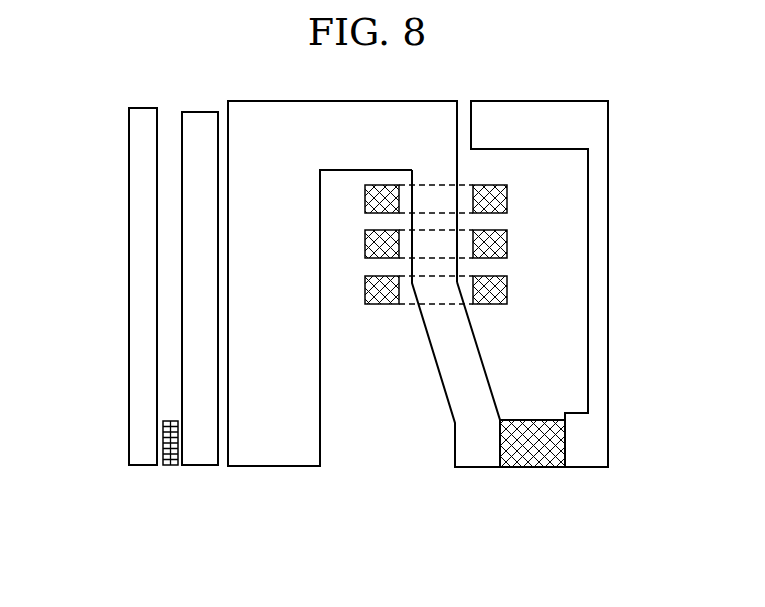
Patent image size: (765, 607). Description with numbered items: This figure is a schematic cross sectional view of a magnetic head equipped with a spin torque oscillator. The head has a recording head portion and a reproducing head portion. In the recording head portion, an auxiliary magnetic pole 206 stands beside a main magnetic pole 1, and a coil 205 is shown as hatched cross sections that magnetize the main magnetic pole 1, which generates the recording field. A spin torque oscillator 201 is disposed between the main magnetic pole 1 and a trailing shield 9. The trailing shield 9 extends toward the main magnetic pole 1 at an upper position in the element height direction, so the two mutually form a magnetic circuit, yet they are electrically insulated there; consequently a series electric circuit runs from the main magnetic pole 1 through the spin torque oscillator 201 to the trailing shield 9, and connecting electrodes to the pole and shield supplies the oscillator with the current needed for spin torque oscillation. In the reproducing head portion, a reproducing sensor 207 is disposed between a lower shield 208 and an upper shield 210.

The main magnetic pole 1 is at (460, 468).
The trailing shield 9 is at (608, 383).
The spin torque oscillator 201 is at (507, 475).
The coil 205 is at (378, 310).
The auxiliary magnetic pole 206 is at (303, 475).
The reproducing sensor 207 is at (172, 475).
The lower shield 208 is at (135, 331).
The upper shield 210 is at (206, 475).